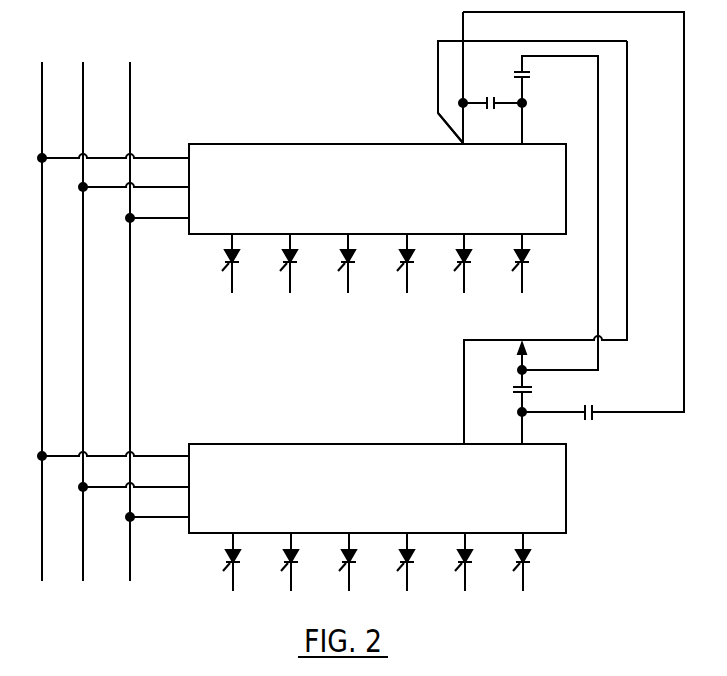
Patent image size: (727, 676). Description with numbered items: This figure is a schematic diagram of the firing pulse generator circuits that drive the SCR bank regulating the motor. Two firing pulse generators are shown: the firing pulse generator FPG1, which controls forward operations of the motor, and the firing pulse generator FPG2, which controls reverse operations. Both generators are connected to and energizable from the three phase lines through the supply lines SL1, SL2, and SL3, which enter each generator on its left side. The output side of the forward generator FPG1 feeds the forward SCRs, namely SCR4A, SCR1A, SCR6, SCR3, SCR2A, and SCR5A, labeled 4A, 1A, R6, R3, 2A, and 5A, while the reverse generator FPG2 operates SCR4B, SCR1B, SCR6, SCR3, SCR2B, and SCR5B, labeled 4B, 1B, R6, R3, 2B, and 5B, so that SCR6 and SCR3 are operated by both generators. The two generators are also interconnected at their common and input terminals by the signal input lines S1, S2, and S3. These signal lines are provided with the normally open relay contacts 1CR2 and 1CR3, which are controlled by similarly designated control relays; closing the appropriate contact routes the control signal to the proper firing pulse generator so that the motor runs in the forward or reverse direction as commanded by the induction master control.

The supply line SL1 is at (36, 310).
The supply line SL2 is at (80, 310).
The supply line SL3 is at (126, 310).
The firing pulse generator FPG1 is at (377, 189).
The firing pulse generator FPG2 is at (377, 488).
The SCR 4A is at (244, 263).
The SCR 1A is at (301, 263).
The SCR R6 is at (362, 412).
The SCR R3 is at (421, 412).
The SCR 2A is at (477, 263).
The SCR 5A is at (535, 263).
The SCR 4B is at (245, 562).
The SCR 1B is at (301, 562).
The SCR 2B is at (477, 562).
The SCR 5B is at (535, 562).
The signal input line S1 is at (525, 133).
The signal input line S2 is at (466, 133).
The signal input line S3 is at (444, 128).
The relay contact 1CR3 is at (495, 239).
The relay contact 1CR2 is at (564, 241).